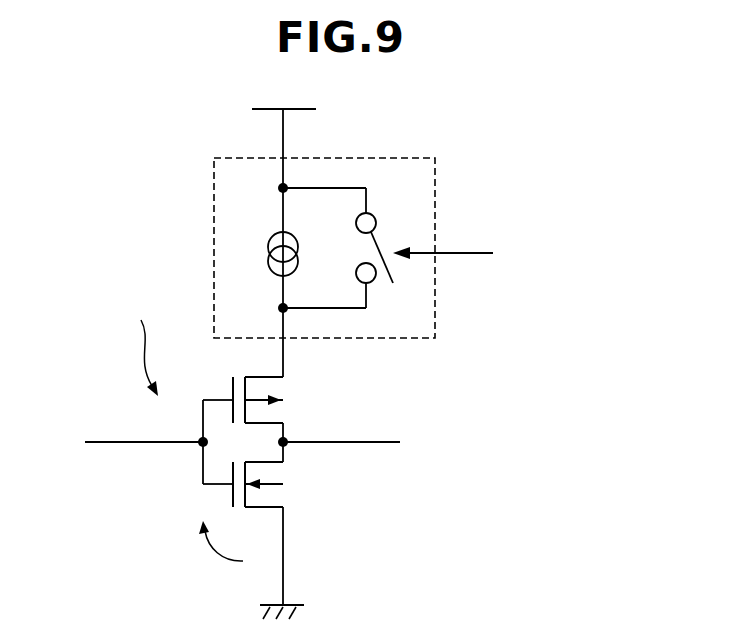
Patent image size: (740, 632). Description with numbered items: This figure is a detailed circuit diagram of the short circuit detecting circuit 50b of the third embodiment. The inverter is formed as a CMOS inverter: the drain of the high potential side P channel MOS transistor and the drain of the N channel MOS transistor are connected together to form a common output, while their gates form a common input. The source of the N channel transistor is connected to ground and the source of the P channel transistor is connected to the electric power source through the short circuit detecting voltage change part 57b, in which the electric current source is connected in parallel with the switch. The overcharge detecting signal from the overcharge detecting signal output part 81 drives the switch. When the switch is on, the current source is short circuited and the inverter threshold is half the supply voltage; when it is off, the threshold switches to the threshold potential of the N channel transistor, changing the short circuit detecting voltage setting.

The short circuit detecting circuit 50b is at (476, 179).
The short circuit detecting voltage change part 57b is at (388, 157).
The overcharge detecting signal output part 81 is at (490, 256).